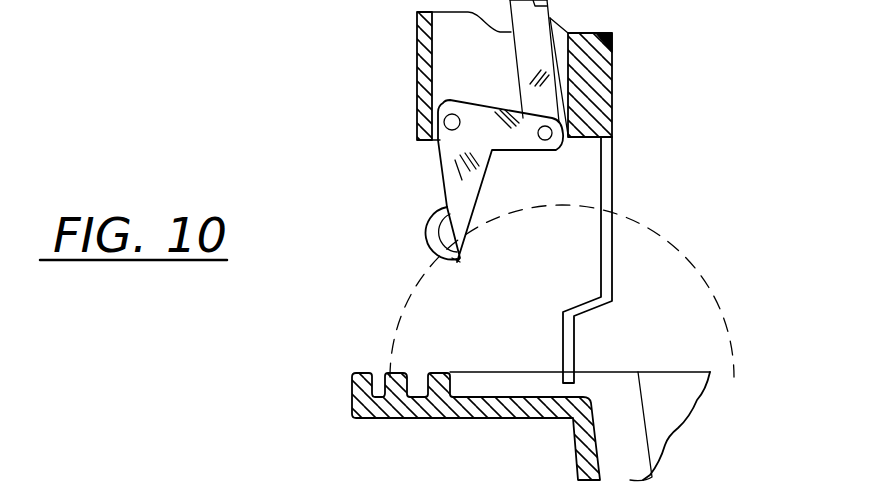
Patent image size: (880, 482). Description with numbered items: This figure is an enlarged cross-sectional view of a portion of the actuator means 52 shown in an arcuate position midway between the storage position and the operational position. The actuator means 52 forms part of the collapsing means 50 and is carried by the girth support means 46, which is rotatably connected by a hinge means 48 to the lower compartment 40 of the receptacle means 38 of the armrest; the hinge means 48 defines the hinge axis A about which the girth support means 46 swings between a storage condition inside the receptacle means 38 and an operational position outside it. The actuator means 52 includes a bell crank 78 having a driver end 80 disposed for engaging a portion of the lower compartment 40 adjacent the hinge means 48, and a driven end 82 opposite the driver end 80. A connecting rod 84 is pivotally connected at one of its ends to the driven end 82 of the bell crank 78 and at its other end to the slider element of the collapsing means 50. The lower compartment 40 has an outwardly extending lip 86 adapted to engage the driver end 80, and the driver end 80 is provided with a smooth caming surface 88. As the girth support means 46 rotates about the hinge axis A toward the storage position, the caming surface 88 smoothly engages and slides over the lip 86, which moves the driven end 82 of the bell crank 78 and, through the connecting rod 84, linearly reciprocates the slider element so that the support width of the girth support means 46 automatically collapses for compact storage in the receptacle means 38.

The receptacle means 38 is at (710, 368).
The lower compartment 40 is at (665, 443).
The girth support means 46 is at (624, 77).
The hinge means 48 is at (583, 372).
The collapsing means 50 is at (430, 172).
The actuator means 52 is at (560, 15).
The bell crank 78 is at (480, 163).
The driver end 80 is at (460, 263).
The driven end 82 is at (548, 148).
The connecting rod 84 is at (533, 55).
The lip 86 is at (350, 398).
The caming surface 88 is at (433, 234).